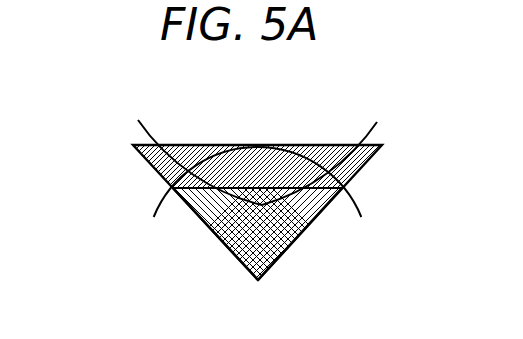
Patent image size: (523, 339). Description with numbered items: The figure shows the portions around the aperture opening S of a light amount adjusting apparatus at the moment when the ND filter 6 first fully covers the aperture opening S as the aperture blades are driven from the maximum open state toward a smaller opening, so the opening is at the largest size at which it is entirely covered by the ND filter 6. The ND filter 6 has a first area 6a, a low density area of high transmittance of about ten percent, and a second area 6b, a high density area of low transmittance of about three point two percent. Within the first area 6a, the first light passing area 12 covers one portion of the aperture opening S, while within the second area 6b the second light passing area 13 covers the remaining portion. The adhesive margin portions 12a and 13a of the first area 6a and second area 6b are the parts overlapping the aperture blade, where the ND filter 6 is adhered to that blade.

The ND filter 6 is at (236, 265).
The first area 6a is at (340, 144).
The second area 6b is at (287, 252).
The first light passing area 12 is at (292, 144).
The adhesive margin portion of the first area 12a is at (148, 160).
The second light passing area 13 is at (298, 236).
The adhesive margin portion of the second area 13a is at (216, 236).
The aperture opening S is at (223, 150).